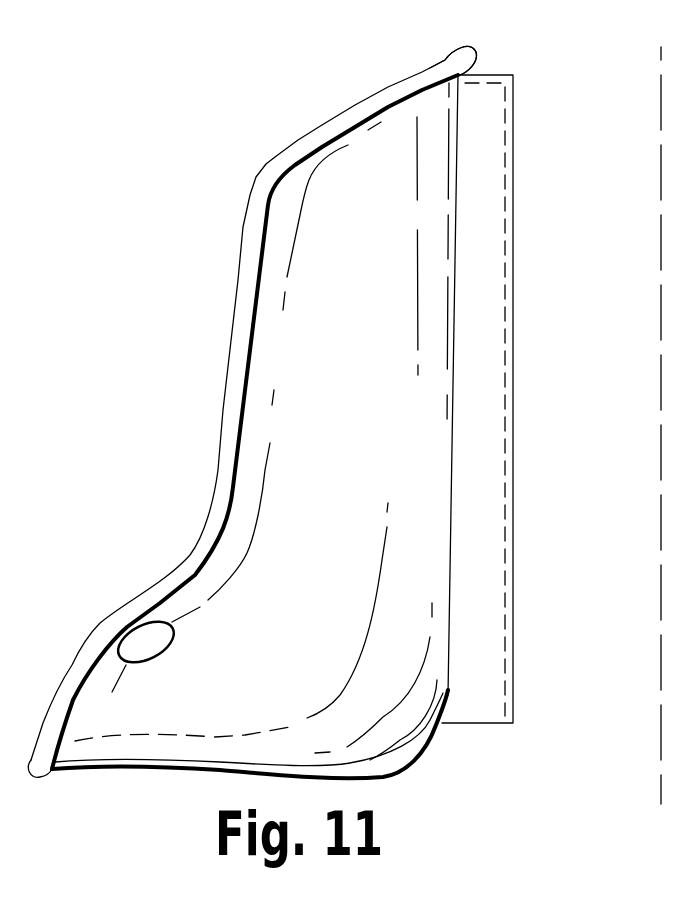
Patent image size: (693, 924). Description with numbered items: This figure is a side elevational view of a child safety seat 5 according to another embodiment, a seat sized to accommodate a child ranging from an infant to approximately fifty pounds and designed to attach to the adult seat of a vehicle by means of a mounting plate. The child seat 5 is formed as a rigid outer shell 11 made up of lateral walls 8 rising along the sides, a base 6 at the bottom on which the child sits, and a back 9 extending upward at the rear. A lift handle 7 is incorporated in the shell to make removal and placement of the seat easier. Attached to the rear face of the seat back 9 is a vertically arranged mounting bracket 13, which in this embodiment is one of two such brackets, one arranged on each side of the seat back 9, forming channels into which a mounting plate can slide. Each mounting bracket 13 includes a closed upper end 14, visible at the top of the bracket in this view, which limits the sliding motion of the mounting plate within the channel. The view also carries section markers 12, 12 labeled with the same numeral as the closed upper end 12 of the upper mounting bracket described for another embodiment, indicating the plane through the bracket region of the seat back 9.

The child safety seat 5 is at (125, 207).
The base 6 is at (230, 773).
The lift handles 7 is at (110, 655).
The lateral walls 8 is at (222, 410).
The back 9 is at (445, 710).
The rigid outer shell 11 is at (363, 172).
The closed upper end 12 is at (627, 47).
The mounting bracket 13 is at (514, 387).
The closed upper end 14 is at (494, 72).